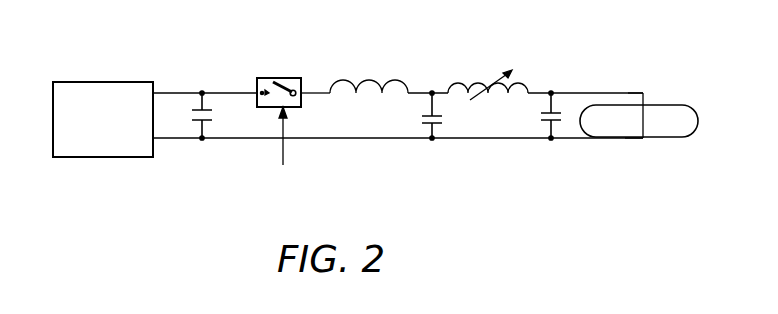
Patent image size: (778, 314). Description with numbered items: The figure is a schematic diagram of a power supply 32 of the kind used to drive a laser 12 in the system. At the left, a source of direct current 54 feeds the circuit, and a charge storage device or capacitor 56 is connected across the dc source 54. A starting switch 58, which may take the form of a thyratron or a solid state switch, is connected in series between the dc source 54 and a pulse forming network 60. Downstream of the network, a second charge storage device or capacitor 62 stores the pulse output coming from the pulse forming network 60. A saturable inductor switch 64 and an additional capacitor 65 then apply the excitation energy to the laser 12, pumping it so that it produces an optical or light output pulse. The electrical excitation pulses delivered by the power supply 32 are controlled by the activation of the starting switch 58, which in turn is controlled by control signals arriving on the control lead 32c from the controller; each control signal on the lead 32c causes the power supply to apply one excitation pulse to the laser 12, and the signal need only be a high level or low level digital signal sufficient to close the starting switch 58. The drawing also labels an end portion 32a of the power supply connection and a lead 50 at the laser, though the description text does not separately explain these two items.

The source of direct current 54 is at (112, 82).
The capacitor 56 is at (213, 115).
The starting switch 58 is at (290, 78).
The pulse forming network 60 is at (392, 79).
The capacitor 62 is at (442, 119).
The saturable inductor switch 64 is at (526, 83).
The additional capacitor 65 is at (539, 115).
The power supply 32 is at (613, 83).
The cable end 32a is at (638, 96).
The control lead 32c is at (287, 130).
The laser 12 is at (699, 120).
The lead 50 is at (628, 140).